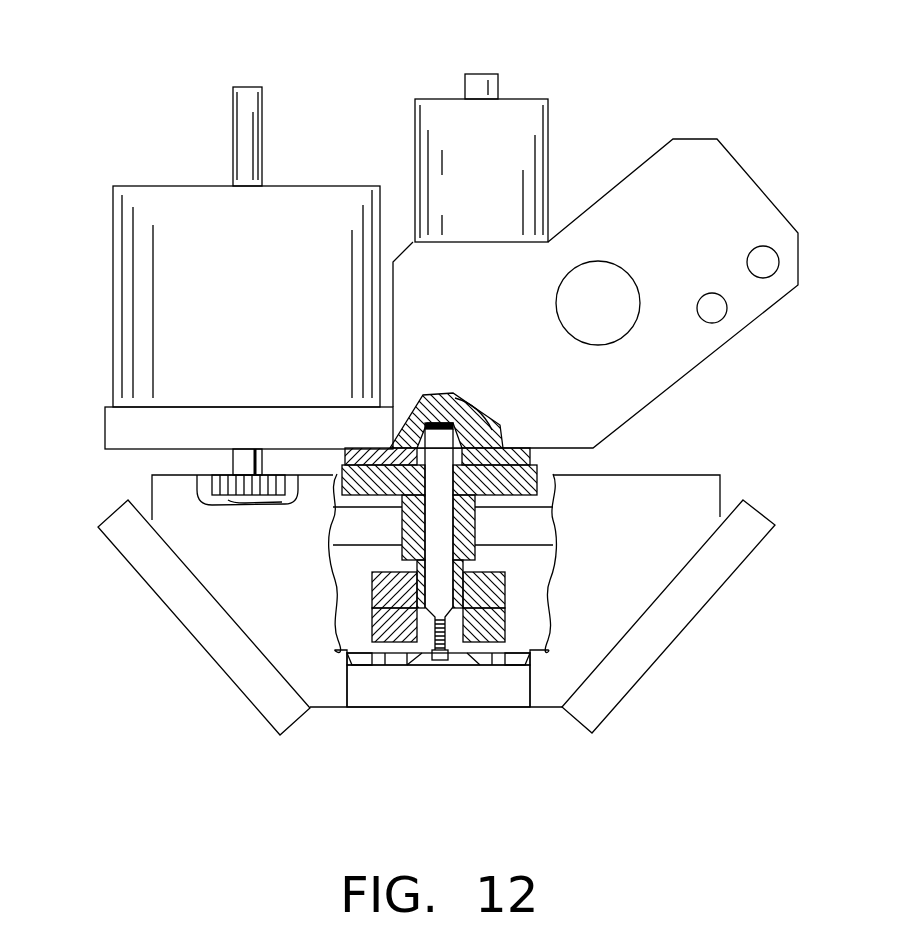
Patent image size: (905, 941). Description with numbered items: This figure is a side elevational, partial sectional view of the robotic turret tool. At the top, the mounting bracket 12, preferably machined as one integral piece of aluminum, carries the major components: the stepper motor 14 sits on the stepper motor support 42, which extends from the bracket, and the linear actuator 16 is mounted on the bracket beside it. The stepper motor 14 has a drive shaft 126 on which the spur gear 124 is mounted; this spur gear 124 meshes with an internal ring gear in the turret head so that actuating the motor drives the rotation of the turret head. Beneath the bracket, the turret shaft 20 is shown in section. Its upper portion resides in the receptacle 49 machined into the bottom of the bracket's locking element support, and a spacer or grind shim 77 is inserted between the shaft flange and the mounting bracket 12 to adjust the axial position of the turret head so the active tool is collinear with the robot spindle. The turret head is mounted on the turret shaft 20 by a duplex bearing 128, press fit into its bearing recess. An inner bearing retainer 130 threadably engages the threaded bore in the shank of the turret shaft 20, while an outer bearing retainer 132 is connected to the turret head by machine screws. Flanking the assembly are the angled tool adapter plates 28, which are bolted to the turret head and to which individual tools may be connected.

The mounting bracket 12 is at (697, 138).
The stepper motor 14 is at (113, 298).
The linear actuator 16 is at (532, 99).
The turret shaft 20 is at (547, 480).
The tool adapter plates 28 is at (117, 510).
The stepper motor support 42 is at (102, 428).
The receptacle 49 is at (445, 393).
The spacer or grind shim 77 is at (510, 443).
The spur gear 124 is at (233, 505).
The drive shaft 126 is at (247, 87).
The duplex bearing 128 is at (533, 585).
The inner bearing retainer 130 is at (420, 667).
The outer bearing retainer 132 is at (333, 653).